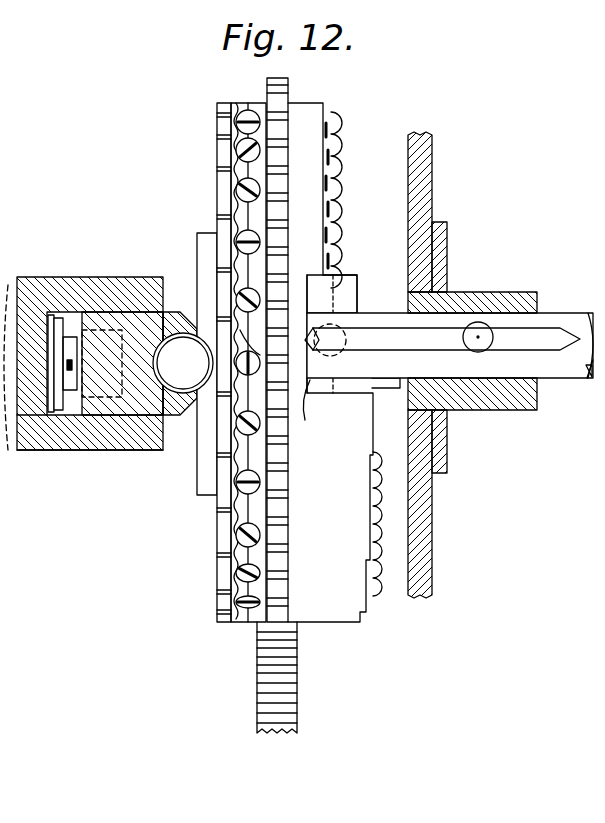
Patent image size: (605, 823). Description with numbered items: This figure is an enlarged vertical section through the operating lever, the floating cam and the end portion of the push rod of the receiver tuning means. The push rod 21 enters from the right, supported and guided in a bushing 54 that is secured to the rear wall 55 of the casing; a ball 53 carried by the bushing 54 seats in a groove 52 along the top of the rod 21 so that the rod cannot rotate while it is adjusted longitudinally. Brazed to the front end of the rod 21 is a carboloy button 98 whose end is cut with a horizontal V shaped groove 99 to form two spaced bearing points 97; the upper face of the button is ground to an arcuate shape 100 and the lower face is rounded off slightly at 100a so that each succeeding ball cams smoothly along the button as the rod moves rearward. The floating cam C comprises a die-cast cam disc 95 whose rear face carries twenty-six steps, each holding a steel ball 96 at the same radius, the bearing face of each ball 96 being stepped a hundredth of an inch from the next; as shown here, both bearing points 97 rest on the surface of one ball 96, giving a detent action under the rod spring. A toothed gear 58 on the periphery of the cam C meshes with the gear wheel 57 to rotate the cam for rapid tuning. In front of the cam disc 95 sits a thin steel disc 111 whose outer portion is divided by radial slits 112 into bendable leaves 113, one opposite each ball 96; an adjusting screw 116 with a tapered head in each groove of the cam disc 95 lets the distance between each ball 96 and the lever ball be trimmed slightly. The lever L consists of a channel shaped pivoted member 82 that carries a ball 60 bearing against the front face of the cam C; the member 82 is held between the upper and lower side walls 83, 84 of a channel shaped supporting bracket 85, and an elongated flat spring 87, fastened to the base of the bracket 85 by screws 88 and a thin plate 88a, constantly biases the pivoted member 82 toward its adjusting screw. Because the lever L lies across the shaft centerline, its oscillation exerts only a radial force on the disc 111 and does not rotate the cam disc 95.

The push rod 21 is at (554, 373).
The groove 52 is at (535, 335).
The ball 53 is at (493, 340).
The bushing 54 is at (475, 292).
The rear wall 55 is at (420, 147).
The gear wheel 57 is at (290, 690).
The toothed gear 58 is at (276, 572).
The ball 60 is at (180, 340).
The pivoted member 82 is at (182, 418).
The upper side wall 83 is at (122, 288).
The lower side wall 84 is at (133, 430).
The supporting bracket 85 is at (74, 278).
The flat spring 87 is at (54, 410).
The screws 88 is at (58, 408).
The thin plate 88a is at (68, 388).
The cam disc 95 is at (297, 110).
The steel balls 96 is at (339, 186).
The bearing points 97 is at (324, 350).
The button 98 is at (332, 382).
The V shaped groove 99 is at (318, 368).
The arcuate upper face 100 is at (336, 314).
The rounded lower face 100a is at (310, 412).
The steel disc 111 is at (212, 157).
The radial slits 112 is at (220, 609).
The bendable leaves 113 is at (222, 530).
The adjusting screw 116 is at (234, 192).
The floating cam C is at (318, 97).
The lever L is at (93, 268).